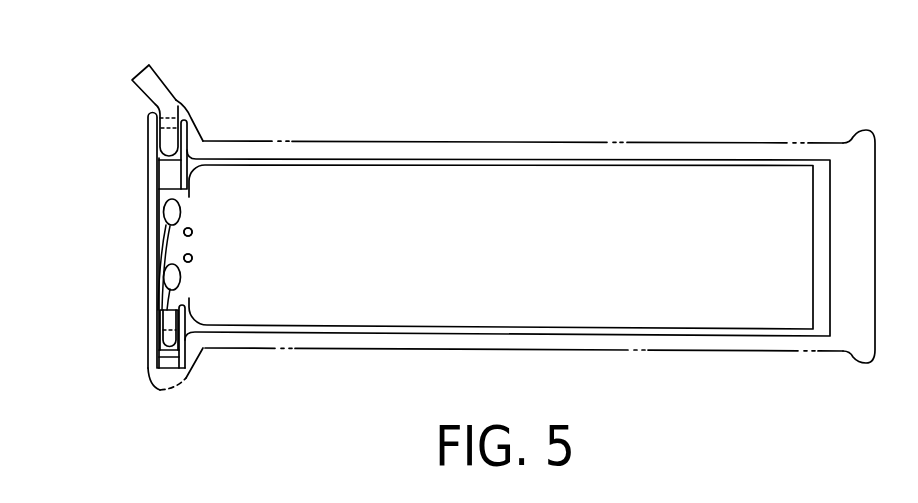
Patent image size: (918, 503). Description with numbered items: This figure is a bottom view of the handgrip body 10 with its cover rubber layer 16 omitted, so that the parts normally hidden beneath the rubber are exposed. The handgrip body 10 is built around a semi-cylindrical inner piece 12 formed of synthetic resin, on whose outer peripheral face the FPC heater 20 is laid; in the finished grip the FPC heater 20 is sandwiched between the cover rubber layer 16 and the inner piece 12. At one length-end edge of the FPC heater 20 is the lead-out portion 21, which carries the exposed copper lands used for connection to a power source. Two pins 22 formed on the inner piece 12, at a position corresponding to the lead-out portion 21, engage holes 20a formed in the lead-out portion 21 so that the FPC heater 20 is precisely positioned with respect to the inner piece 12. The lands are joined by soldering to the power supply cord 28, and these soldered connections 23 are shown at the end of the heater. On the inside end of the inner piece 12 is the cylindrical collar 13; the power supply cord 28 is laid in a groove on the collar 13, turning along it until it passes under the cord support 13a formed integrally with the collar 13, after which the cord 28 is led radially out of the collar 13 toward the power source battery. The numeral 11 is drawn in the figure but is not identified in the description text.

The handgrip body 10 is at (762, 128).
The element inside tube 11 is at (172, 124).
The inner piece 12 is at (580, 159).
The collar 13 is at (152, 152).
The cord support 13a is at (181, 103).
The cover rubber layer 16 is at (674, 141).
The FPC heater 20 is at (487, 197).
The holes 20a is at (193, 232).
The lead-out portion 21 is at (158, 243).
The pins 22 is at (191, 229).
The soldered connections 23 is at (172, 213).
The power supply cord 28 is at (143, 98).